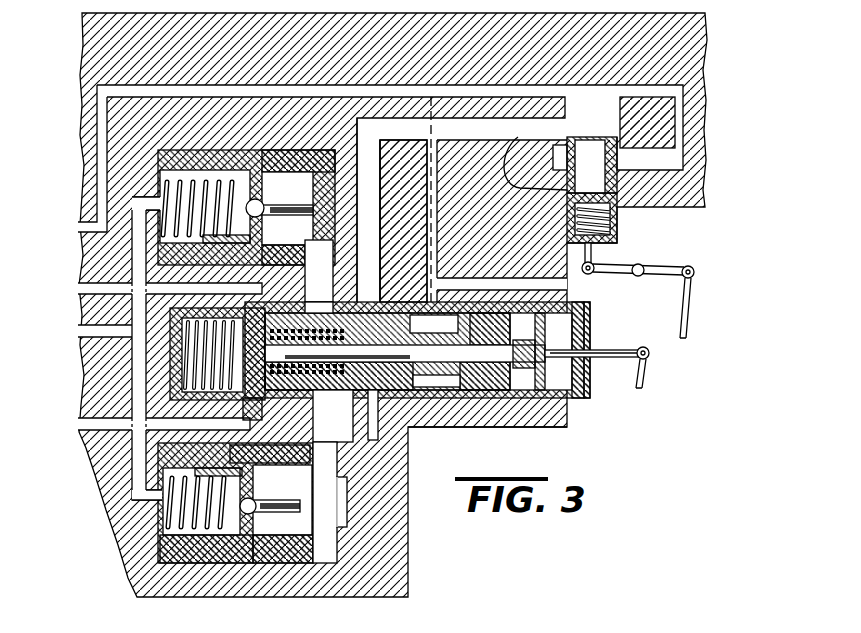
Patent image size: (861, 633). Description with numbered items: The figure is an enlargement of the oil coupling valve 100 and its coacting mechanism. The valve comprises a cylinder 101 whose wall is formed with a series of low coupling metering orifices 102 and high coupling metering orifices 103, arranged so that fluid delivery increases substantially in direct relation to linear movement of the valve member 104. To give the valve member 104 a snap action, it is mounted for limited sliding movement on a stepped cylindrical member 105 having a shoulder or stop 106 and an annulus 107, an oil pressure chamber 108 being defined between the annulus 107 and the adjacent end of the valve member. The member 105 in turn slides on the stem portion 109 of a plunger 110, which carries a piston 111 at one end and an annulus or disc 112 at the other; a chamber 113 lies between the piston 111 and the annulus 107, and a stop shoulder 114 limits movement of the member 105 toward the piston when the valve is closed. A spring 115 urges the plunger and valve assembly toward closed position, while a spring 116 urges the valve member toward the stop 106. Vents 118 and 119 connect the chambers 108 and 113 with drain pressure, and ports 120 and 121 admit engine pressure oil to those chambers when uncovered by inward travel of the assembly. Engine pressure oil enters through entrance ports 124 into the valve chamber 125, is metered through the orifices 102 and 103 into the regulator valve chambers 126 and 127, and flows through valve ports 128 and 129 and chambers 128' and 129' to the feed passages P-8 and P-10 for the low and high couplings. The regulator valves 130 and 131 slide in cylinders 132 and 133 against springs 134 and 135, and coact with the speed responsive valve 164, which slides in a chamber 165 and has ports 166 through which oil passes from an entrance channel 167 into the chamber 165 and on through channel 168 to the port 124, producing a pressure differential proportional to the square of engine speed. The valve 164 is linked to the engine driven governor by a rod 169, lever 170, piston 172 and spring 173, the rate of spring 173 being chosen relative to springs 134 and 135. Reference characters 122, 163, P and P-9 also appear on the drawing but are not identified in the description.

The coupling valve 100 is at (588, 405).
The cylinder 101 is at (555, 427).
The low coupling metering orifices 102 is at (340, 392).
The high coupling metering orifices 103 is at (332, 322).
The valve member 104 is at (418, 385).
The stepped cylindrical member 105 is at (443, 380).
The shoulder or stop 106 is at (486, 375).
The annulus 107 is at (513, 378).
The oil pressure chamber 108 is at (470, 390).
The stem portion 109 is at (580, 393).
The plunger 110 is at (546, 345).
The piston 111 is at (548, 322).
The annulus or disc 112 is at (247, 450).
The chamber 113 is at (567, 290).
The stop shoulder 114 is at (584, 367).
The spring 115 is at (195, 352).
The spring 116 is at (333, 436).
The vent 118 is at (410, 460).
The vent 119 is at (405, 354).
The port 120 is at (434, 323).
The port 121 is at (584, 265).
The plate 122 is at (278, 446).
The entrance ports 124 is at (368, 313).
The valve chamber 125 is at (352, 287).
The regulator valve chamber 126 is at (293, 538).
The regulator valve chamber 127 is at (297, 198).
The valve port 128 is at (212, 583).
The chamber 128' is at (282, 500).
The valve port 129 is at (296, 171).
The chamber 129' is at (297, 245).
The valve 130 is at (252, 527).
The valve 131 is at (254, 216).
The cylinder 132 is at (200, 560).
The cylinder 133 is at (160, 165).
The spring 134 is at (175, 522).
The spring 135 is at (160, 190).
The pivot lever 163 is at (650, 354).
The speed responsive valve 164 is at (600, 148).
The chamber 165 is at (534, 154).
The ports 166 is at (610, 172).
The entrance channel 167 is at (678, 161).
The channel 168 is at (455, 199).
The rod 169 is at (689, 312).
The lever 170 is at (665, 274).
The piston 172 is at (602, 242).
The spring 173 is at (620, 233).
The feed passage P-10 is at (80, 288).
The pressure port P is at (88, 332).
The feed passage P-8 is at (78, 424).
The passage P-9 is at (319, 271).